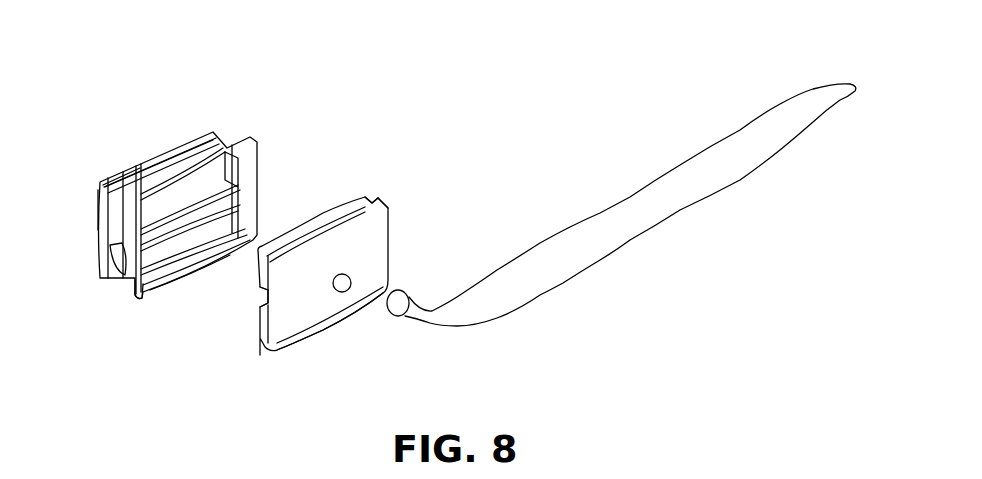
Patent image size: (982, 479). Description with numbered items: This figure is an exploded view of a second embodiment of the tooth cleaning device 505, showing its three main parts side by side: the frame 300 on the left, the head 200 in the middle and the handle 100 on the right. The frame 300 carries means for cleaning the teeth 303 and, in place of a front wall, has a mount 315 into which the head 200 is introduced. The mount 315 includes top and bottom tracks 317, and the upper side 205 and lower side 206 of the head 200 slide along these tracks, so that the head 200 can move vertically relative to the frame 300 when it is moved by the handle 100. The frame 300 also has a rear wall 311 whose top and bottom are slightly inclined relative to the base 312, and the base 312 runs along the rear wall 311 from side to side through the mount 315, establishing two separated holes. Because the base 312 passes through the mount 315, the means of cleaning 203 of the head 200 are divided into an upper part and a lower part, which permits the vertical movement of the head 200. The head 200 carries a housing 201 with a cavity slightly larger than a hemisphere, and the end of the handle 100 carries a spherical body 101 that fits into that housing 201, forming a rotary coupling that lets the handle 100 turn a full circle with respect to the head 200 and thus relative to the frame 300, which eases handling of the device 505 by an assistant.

The handle 100 is at (633, 202).
The spherical body 101 is at (399, 318).
The head 200 is at (375, 235).
The housing 201 is at (390, 247).
The means of cleaning 203 is at (365, 196).
The upper side 205 is at (382, 200).
The lower side 206 is at (330, 335).
The frame 300 is at (268, 118).
The means for cleaning the teeth 303 is at (122, 177).
The rear wall 311 is at (95, 187).
The base 312 is at (96, 264).
The frame mount 315 is at (133, 296).
The top and bottom tracks 317 is at (177, 290).
The tooth cleaning device 505 is at (195, 114).